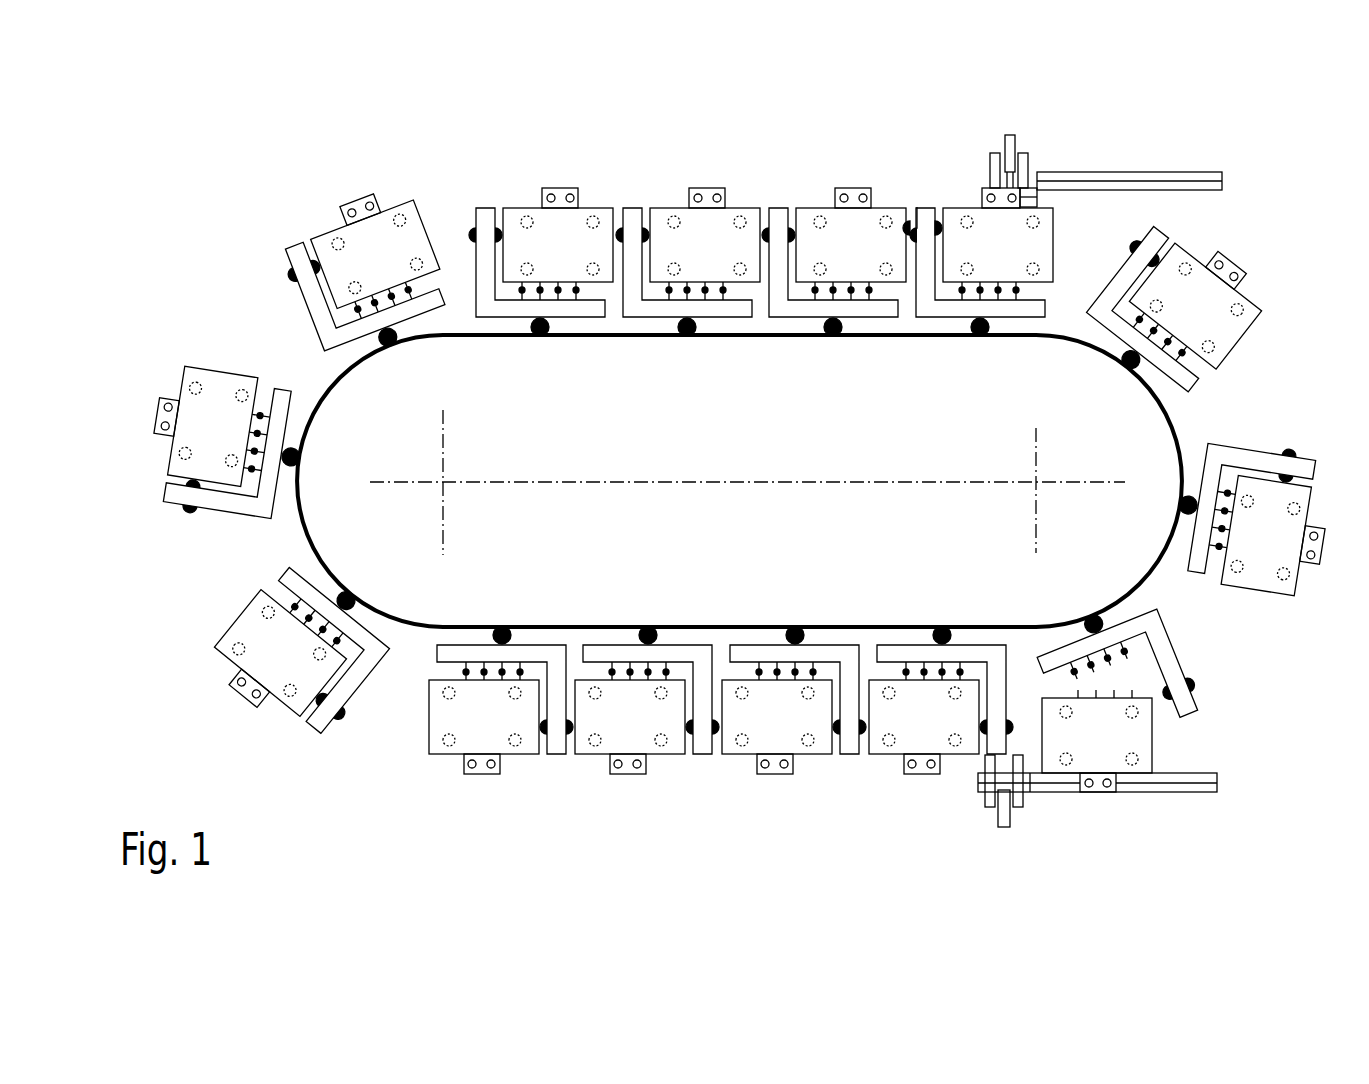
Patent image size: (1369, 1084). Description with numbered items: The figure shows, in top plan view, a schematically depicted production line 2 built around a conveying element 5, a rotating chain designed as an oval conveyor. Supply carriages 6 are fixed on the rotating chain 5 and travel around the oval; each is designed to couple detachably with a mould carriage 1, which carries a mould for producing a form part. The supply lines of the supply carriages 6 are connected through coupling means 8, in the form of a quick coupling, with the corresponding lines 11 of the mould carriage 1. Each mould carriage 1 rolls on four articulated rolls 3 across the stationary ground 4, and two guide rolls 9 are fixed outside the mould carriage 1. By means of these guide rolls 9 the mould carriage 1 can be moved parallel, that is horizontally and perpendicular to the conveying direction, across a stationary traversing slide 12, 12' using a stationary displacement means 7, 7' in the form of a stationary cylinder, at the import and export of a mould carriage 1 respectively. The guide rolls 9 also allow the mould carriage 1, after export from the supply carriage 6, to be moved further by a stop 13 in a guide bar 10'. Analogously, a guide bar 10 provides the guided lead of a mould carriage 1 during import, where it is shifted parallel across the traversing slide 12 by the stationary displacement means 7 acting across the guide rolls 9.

The mould carriage 1 is at (807, 213).
The production line 2 is at (212, 571).
The articulated rolls 3 is at (515, 697).
The stationary ground 4 is at (312, 815).
The conveying element 5 is at (335, 390).
The supply carriage 6 is at (807, 308).
The stationary displacement means 7 is at (964, 815).
The stationary displacement means 7' is at (982, 143).
The coupling means 8 is at (665, 672).
The guide rolls 9 is at (636, 766).
The guide bar 10 is at (1097, 825).
The guide bar 10' is at (1129, 140).
The lines 11 is at (813, 673).
The traversing slide 12 is at (1011, 817).
The traversing slide 12' is at (1052, 148).
The stop 13 is at (935, 228).